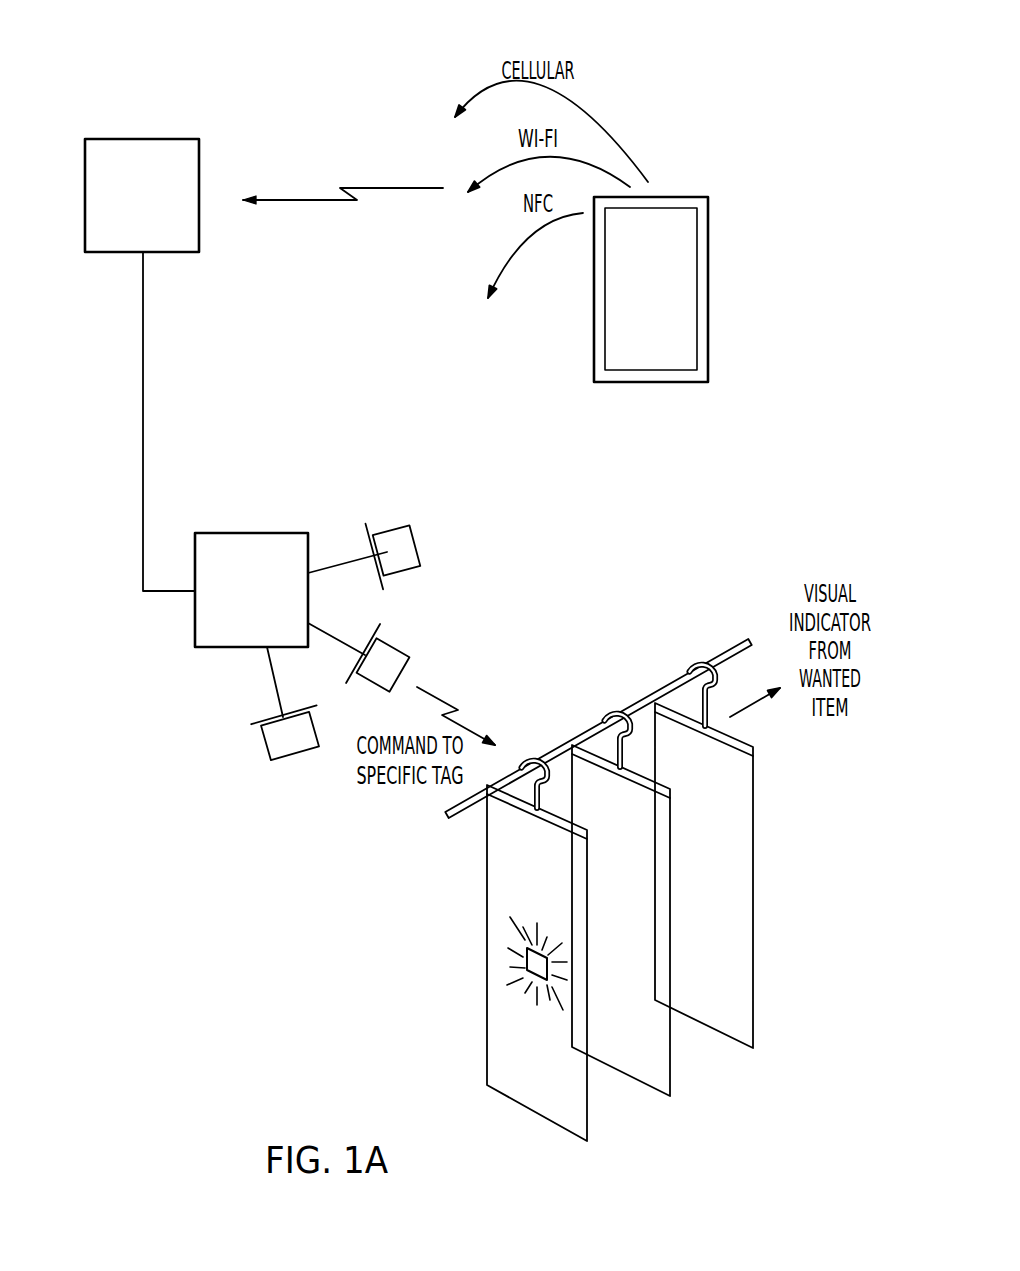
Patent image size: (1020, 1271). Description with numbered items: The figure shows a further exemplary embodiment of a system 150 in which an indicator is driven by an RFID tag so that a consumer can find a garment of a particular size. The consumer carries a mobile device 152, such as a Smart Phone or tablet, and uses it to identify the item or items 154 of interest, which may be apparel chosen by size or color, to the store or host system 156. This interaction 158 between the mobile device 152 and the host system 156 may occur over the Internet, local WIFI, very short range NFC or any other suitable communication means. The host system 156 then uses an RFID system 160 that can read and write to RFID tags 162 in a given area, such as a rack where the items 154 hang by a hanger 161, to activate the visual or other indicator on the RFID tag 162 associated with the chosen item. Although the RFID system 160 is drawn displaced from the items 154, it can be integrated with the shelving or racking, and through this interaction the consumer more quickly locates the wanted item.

The system 150 is at (100, 587).
The mobile device 152 is at (708, 293).
The items of interest 154 is at (753, 884).
The host system 156 is at (144, 139).
The interaction 158 is at (350, 187).
The RFID system 160 is at (250, 533).
The hanger 161 is at (587, 838).
The RFID tag 162 is at (527, 968).